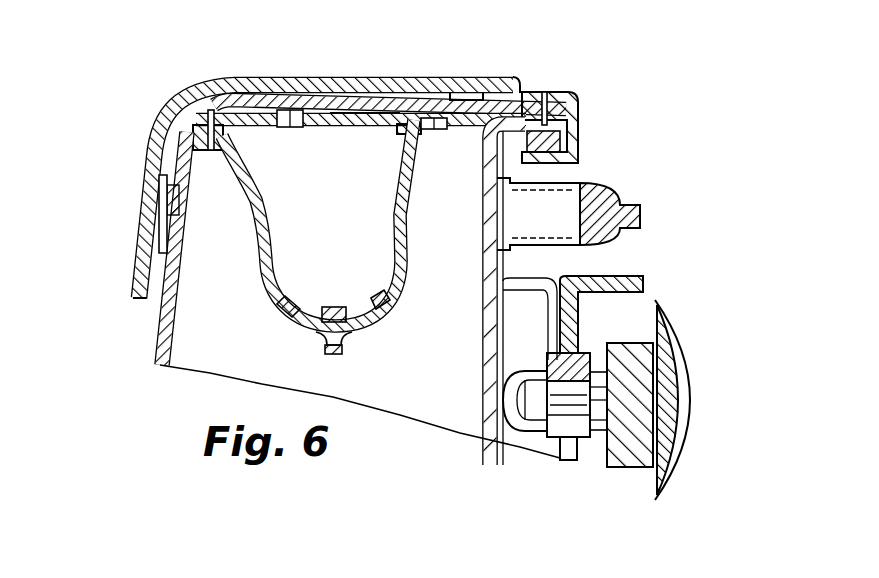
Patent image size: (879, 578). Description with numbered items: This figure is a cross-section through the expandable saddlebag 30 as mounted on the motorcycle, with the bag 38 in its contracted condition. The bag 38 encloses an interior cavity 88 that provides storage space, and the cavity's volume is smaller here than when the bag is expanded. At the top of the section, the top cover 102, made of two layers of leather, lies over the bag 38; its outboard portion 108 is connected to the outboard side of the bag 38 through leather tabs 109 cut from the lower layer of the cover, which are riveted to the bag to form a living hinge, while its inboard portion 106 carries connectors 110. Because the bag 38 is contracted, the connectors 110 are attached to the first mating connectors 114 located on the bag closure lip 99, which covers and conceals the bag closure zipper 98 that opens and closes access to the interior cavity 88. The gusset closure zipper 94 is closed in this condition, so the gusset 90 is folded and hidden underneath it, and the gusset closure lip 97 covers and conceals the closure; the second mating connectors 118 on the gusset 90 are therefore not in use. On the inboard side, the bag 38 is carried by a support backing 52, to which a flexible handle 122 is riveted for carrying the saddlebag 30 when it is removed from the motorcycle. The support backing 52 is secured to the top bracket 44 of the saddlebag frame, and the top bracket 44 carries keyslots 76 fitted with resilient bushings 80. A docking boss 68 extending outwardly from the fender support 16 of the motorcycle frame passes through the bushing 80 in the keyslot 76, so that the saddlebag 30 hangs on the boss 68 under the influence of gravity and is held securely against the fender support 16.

The expandable saddlebag 30 is at (143, 116).
The top cover 102 is at (222, 76).
The inboard portion 106 is at (396, 91).
The gusset closure lip 97 is at (357, 103).
The connectors 110 is at (468, 93).
The first mating connectors 114 is at (503, 92).
The zipper 94 is at (302, 127).
The bag closure lip 99 is at (387, 105).
The zipper 98 is at (445, 131).
The support backing 52 is at (482, 330).
The handle 122 is at (607, 187).
The top bracket 44 is at (630, 278).
The bushings 80 is at (580, 357).
The docking bosses 68 is at (513, 395).
The keyslots 76 is at (560, 450).
The fender support 16 is at (662, 322).
The bag 38 is at (158, 333).
The leather tabs 109 is at (160, 233).
The outboard portion 108 is at (140, 272).
The gusset 90 is at (265, 231).
The second mating connectors 118 is at (330, 305).
The interior cavity 88 is at (213, 333).